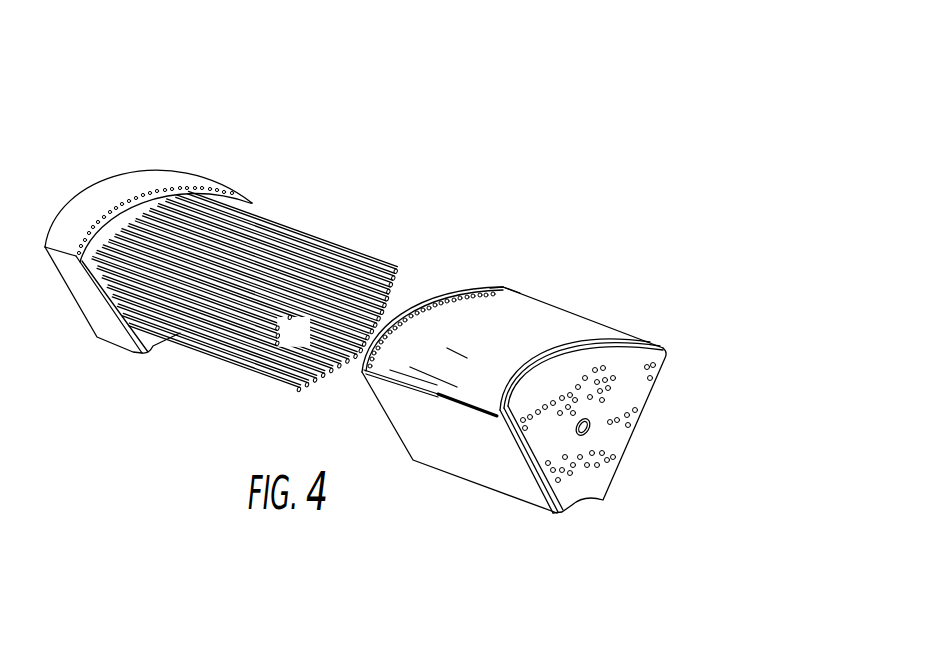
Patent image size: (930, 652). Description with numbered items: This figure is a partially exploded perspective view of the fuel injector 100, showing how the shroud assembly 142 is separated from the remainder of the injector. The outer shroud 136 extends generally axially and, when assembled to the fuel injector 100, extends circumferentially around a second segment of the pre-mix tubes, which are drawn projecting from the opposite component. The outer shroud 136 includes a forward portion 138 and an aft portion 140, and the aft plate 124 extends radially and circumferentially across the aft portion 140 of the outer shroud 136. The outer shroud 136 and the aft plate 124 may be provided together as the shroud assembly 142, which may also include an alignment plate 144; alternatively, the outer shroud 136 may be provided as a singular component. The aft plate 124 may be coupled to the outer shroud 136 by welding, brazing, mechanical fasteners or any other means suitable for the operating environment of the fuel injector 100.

The fuel injector 100 is at (468, 78).
The aft plate 124 is at (603, 496).
The outer shroud 136 is at (538, 308).
The forward portion 138 is at (510, 266).
The aft portion 140 is at (633, 316).
The shroud assembly 142 is at (455, 528).
The alignment plate 144 is at (436, 292).